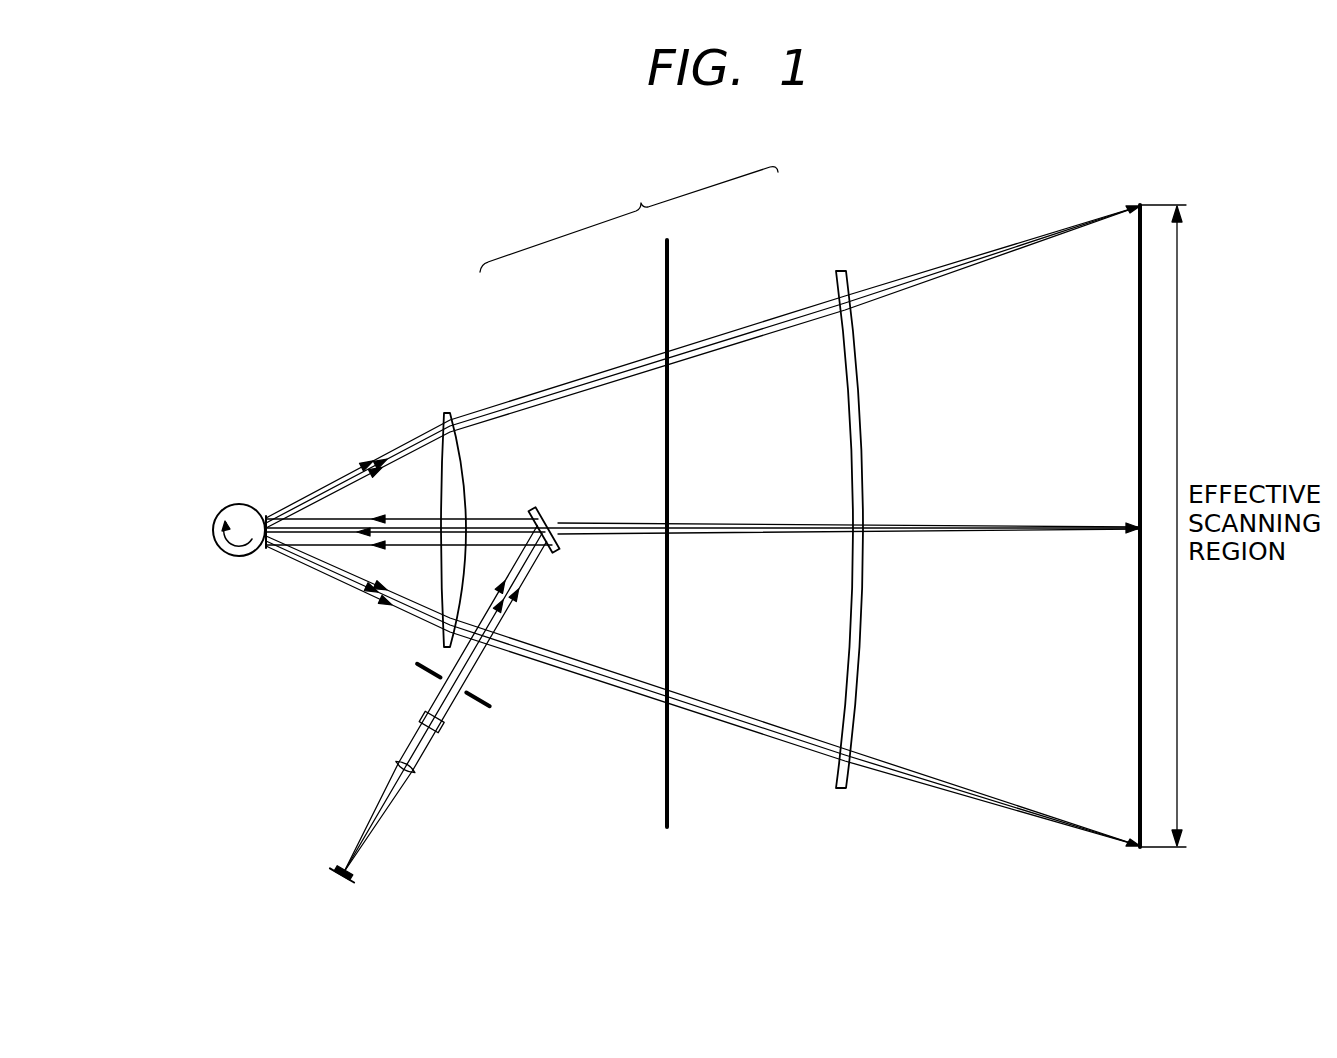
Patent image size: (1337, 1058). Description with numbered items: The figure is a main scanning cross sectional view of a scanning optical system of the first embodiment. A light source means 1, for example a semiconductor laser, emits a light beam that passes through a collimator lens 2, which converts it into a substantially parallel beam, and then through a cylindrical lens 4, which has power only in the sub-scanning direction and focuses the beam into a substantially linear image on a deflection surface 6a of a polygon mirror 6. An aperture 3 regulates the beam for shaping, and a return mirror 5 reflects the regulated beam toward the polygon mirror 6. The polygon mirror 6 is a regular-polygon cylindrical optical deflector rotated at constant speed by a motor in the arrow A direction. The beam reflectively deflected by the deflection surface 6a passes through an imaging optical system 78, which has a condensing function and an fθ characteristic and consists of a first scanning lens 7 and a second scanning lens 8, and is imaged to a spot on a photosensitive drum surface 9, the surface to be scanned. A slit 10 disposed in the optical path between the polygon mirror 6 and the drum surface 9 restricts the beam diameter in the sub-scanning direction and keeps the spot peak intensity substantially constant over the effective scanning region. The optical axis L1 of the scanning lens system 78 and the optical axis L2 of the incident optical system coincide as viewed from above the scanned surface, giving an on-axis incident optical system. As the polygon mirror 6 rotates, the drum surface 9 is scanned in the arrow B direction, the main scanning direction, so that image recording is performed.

The light source means 1 is at (354, 877).
The collimator lens 2 is at (413, 774).
The aperture 3 is at (488, 710).
The cylindrical lens 4 is at (440, 728).
The return mirror 5 is at (555, 511).
The polygon mirror 6 is at (243, 505).
The deflection surface 6a is at (277, 550).
The first scanning lens 7 is at (447, 412).
The second scanning lens 8 is at (838, 272).
The imaging optical system 78 is at (629, 219).
The photosensitive drum surface 9 is at (1138, 255).
The slit member 10 is at (668, 285).
The arrow A direction A is at (223, 553).
The arrow B direction B is at (1117, 432).
The optical axis of the scanning lens system L1 is at (743, 530).
The optical axis of the incident optical system L2 is at (518, 570).